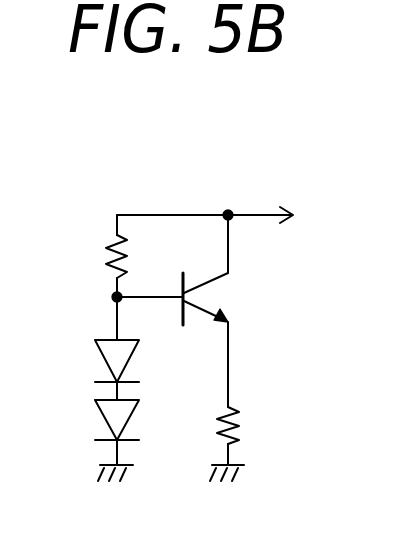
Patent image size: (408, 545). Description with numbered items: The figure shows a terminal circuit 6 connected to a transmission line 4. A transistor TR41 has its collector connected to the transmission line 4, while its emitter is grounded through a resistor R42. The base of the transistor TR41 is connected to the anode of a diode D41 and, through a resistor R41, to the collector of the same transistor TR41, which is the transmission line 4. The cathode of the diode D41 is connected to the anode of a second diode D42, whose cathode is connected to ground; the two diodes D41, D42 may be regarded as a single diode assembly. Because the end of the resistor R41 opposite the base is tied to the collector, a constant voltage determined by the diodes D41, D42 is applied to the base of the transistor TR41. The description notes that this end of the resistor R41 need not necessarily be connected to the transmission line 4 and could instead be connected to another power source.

The transmission line 4 is at (262, 214).
The terminal circuit 6 is at (245, 184).
The resistor R41 is at (108, 262).
The resistor R42 is at (237, 430).
The diode D41 is at (96, 349).
The diode D42 is at (97, 407).
The transistor TR41 is at (207, 298).